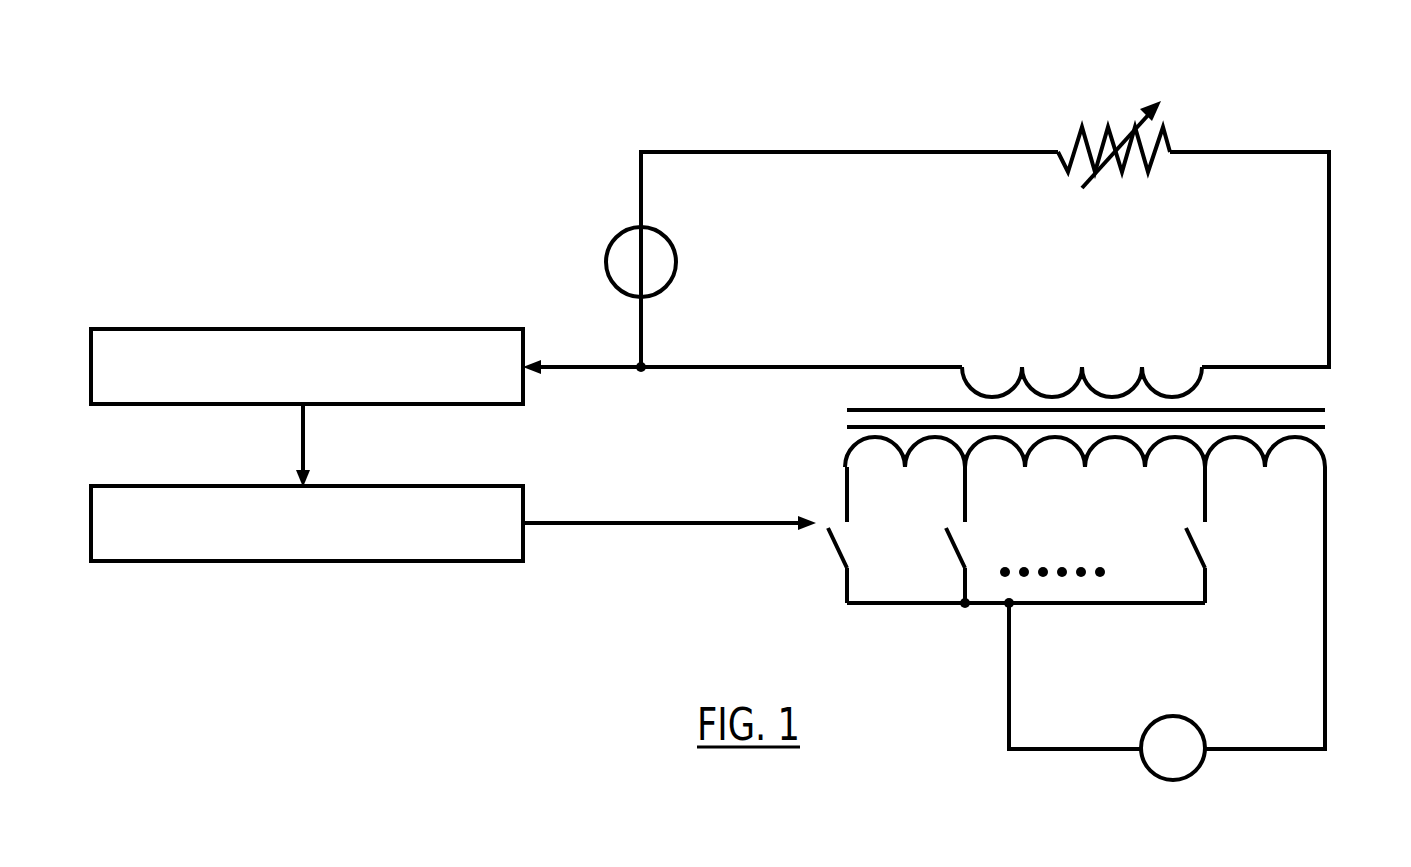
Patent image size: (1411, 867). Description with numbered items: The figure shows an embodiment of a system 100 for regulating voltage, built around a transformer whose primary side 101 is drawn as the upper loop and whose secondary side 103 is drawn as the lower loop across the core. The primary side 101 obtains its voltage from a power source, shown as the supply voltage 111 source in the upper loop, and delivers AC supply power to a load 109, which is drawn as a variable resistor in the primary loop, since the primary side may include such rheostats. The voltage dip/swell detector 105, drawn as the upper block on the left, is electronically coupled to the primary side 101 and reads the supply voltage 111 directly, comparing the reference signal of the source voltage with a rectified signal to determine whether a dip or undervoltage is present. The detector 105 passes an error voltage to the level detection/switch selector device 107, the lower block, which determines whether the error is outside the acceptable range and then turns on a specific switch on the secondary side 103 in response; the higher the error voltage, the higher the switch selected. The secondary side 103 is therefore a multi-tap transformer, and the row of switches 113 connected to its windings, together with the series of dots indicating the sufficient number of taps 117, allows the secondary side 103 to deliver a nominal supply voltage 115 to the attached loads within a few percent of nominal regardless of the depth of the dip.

The system 100 is at (240, 648).
The primary side 101 is at (918, 150).
The secondary side 103 is at (1325, 612).
The voltage dip/swell detector 105 is at (160, 328).
The level detection/switch selector device 107 is at (160, 485).
The load 109 is at (1108, 126).
The supply voltage 111 is at (619, 236).
The switches S1..Sm 113 is at (845, 567).
The secondary voltage Vs(t) 115 is at (1172, 714).
The taps 117 is at (1055, 580).